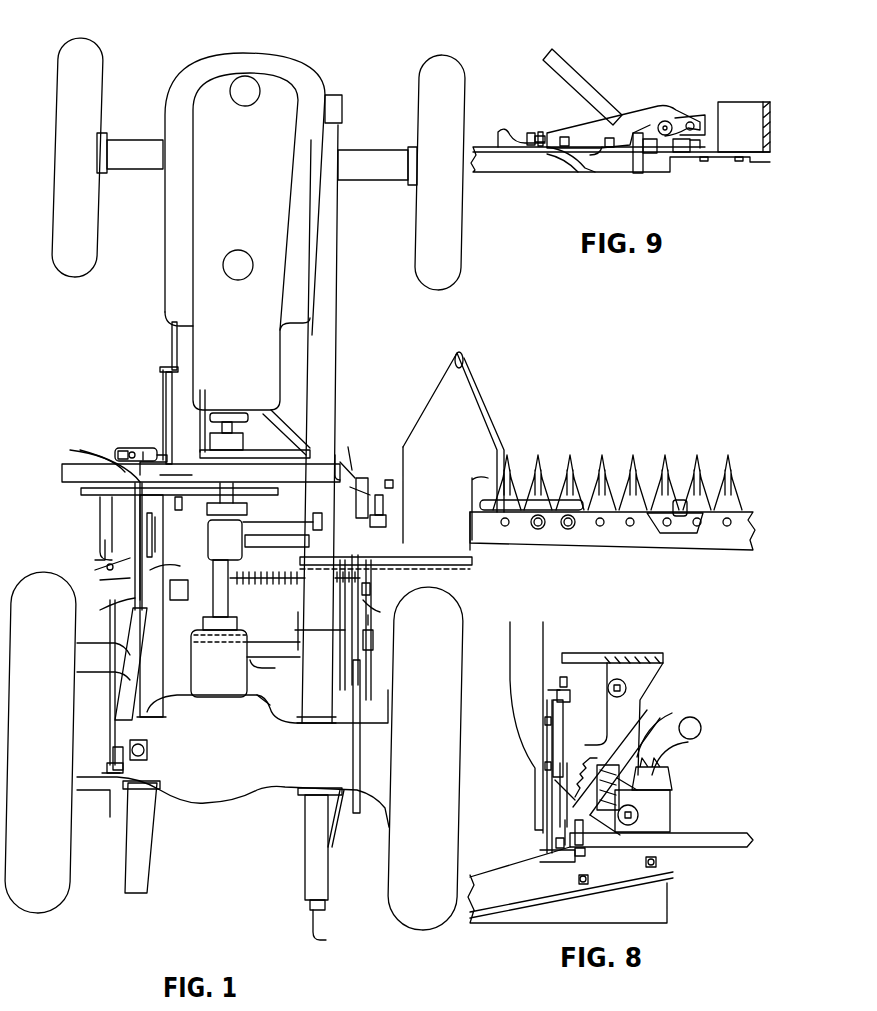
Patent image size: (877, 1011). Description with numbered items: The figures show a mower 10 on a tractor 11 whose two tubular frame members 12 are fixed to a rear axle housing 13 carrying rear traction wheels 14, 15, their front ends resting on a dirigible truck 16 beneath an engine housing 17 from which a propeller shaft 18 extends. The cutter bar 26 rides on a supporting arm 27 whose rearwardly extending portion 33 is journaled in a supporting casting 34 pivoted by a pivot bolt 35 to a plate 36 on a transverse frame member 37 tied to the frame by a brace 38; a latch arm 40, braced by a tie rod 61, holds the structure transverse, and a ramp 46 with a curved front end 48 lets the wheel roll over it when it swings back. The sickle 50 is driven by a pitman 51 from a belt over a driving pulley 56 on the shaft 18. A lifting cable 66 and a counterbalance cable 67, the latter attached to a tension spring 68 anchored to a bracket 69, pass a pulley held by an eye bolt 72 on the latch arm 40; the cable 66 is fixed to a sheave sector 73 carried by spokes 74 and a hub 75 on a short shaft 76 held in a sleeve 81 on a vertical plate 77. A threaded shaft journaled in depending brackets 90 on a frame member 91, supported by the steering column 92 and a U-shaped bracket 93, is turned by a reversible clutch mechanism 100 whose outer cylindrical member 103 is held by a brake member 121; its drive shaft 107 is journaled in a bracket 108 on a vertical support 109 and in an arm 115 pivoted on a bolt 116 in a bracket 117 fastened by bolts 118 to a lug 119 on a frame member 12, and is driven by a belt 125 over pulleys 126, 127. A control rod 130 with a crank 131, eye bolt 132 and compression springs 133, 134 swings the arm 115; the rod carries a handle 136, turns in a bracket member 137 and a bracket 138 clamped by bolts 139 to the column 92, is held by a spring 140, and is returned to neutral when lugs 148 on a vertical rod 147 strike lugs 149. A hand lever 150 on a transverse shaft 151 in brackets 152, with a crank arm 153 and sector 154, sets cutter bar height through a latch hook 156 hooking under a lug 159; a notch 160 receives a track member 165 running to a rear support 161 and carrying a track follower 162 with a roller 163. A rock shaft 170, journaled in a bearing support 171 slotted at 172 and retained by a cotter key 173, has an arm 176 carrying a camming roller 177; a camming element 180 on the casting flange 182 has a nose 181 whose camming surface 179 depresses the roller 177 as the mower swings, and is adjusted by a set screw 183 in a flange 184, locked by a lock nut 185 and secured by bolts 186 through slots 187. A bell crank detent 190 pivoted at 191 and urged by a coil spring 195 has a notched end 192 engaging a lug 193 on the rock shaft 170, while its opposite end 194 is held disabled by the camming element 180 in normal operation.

In FIG. 1, the mower 10 is at (507, 406).
In FIG. 1, the tractor 11 is at (352, 343).
In FIG. 1, the tubular frame members 12 is at (335, 395).
In FIG. 1, the rear axle housing 13 is at (245, 766).
In FIG. 1, the rear traction wheel 14 is at (425, 925).
In FIG. 1, the rear traction wheel 15 is at (40, 905).
In FIG. 1, the front dirigible truck 16 is at (467, 57).
In FIG. 1, the engine housing 17 is at (250, 194).
In FIG. 1, the propeller shaft 18 is at (240, 457).
In FIG. 1, the cutter bar 26 is at (606, 563).
In FIG. 1, the supporting arm 27 is at (270, 535).
In FIG. 1, the rearwardly extending portion 33 is at (188, 598).
In FIG. 8, the rearwardly extending portion 33 is at (690, 742).
In FIG. 1, the supporting casting 34 is at (190, 640).
In FIG. 8, the supporting casting 34 is at (672, 780).
In FIG. 8, the pivot bolt 35 is at (638, 818).
In FIG. 1, the plate 36 is at (182, 660).
In FIG. 9, the plate 36 is at (745, 160).
In FIG. 8, the plate 36 is at (670, 810).
In FIG. 1, the transverse frame member 37 is at (276, 695).
In FIG. 9, the transverse frame member 37 is at (740, 102).
In FIG. 8, the transverse frame member 37 is at (705, 870).
In FIG. 9, the brace 38 is at (565, 52).
In FIG. 8, the brace 38 is at (648, 713).
In FIG. 9, the latch arm 40 is at (490, 165).
In FIG. 8, the latch arm 40 is at (512, 668).
In FIG. 1, the ramp or shield 46 is at (452, 456).
In FIG. 1, the downwardly curved front end 48 is at (425, 425).
In FIG. 1, the reciprocating sickle 50 is at (618, 478).
In FIG. 1, the pitman 51 is at (365, 478).
In FIG. 1, the driving pulley 56 is at (247, 511).
In FIG. 1, the tie rod 61 is at (280, 416).
In FIG. 1, the lifting cable 66 is at (445, 557).
In FIG. 1, the counterbalance cable 67 is at (445, 570).
In FIG. 1, the tension spring 68 is at (290, 580).
In FIG. 1, the bracket 69 is at (158, 608).
In FIG. 1, the eye bolt 72 is at (138, 546).
In FIG. 1, the sheave sector 73 is at (83, 492).
In FIG. 1, the spokes 74 is at (100, 505).
In FIG. 1, the hub 75 is at (108, 530).
In FIG. 1, the short transversely disposed shaft 76 is at (100, 545).
In FIG. 1, the vertically extending plate 77 is at (157, 548).
In FIG. 1, the sleeve 81 is at (220, 560).
In FIG. 1, the depending brackets 90 is at (72, 450).
In FIG. 1, the frame member 91 is at (115, 590).
In FIG. 1, the steering wheel supporting column 92 is at (125, 768).
In FIG. 1, the U-shaped bracket 93 is at (152, 523).
In FIG. 1, the reversible clutch mechanism 100 is at (120, 441).
In FIG. 1, the outer cylindrical member 103 is at (63, 472).
In FIG. 1, the driving shaft 107 is at (166, 385).
In FIG. 1, the bracket 108 is at (162, 368).
In FIG. 1, the vertical support 109 is at (172, 340).
In FIG. 1, the arm 115 is at (338, 440).
In FIG. 1, the bolt 116 is at (350, 455).
In FIG. 1, the bracket 117 is at (360, 480).
In FIG. 1, the bolts 118 is at (355, 486).
In FIG. 1, the upwardly projecting lug 119 is at (309, 545).
In FIG. 1, the brake member 121 is at (225, 467).
In FIG. 1, the power transmitting belt 125 is at (205, 420).
In FIG. 1, the pulley 126 is at (240, 413).
In FIG. 1, the pulley 127 is at (163, 405).
In FIG. 1, the control rod 130 is at (110, 605).
In FIG. 1, the crank 131 is at (176, 468).
In FIG. 1, the eye bolt 132 is at (158, 454).
In FIG. 1, the compression spring 133 is at (143, 450).
In FIG. 1, the compression spring 134 is at (125, 450).
In FIG. 1, the handle portion 136 is at (100, 778).
In FIG. 1, the upwardly extending bracket member 137 is at (95, 452).
In FIG. 1, the bracket 138 is at (150, 790).
In FIG. 1, the clamping bolts 139 is at (148, 752).
In FIG. 1, the spring 140 is at (113, 752).
In FIG. 1, the vertically extending rod 147 is at (165, 568).
In FIG. 1, the ears or lugs 148 is at (182, 500).
In FIG. 1, the cooperative lug 149 is at (105, 562).
In FIG. 1, the manually controlled lever 150 is at (372, 668).
In FIG. 1, the transverse shaft 151 is at (345, 600).
In FIG. 1, the brackets 152 is at (298, 625).
In FIG. 1, the crank arm 153 is at (372, 590).
In FIG. 1, the sector 154 is at (373, 640).
In FIG. 1, the latch hook 156 is at (380, 610).
In FIG. 1, the projecting lug 159 is at (372, 622).
In FIG. 1, the notch 160 is at (393, 480).
In FIG. 1, the rear support 161 is at (325, 907).
In FIG. 1, the track follower 162 is at (386, 520).
In FIG. 1, the roller 163 is at (390, 492).
In FIG. 1, the track member 165 is at (335, 830).
In FIG. 1, the rock shaft 170 is at (286, 668).
In FIG. 8, the rock shaft 170 is at (735, 850).
In FIG. 9, the bearing support 171 is at (695, 150).
In FIG. 8, the bearing support 171 is at (575, 845).
In FIG. 8, the slot 172 is at (580, 860).
In FIG. 8, the cotter key 173 is at (585, 852).
In FIG. 9, the arm 176 is at (680, 152).
In FIG. 8, the arm 176 is at (556, 845).
In FIG. 9, the camming roller 177 is at (683, 118).
In FIG. 8, the camming roller 177 is at (565, 835).
In FIG. 9, the camming surface 179 is at (690, 122).
In FIG. 9, the camming element 180 is at (637, 100).
In FIG. 8, the camming element 180 is at (545, 780).
In FIG. 9, the rearwardly projecting nose 181 is at (668, 120).
In FIG. 8, the rearwardly projecting nose 181 is at (545, 858).
In FIG. 8, the flange portion 182 is at (565, 730).
In FIG. 9, the set screw 183 is at (530, 132).
In FIG. 8, the set screw 183 is at (575, 670).
In FIG. 8, the flange 184 is at (570, 697).
In FIG. 9, the lock nut 185 is at (543, 132).
In FIG. 8, the lock nut 185 is at (550, 690).
In FIG. 9, the bolts 186 is at (612, 141).
In FIG. 8, the bolts 186 is at (545, 719).
In FIG. 9, the slots 187 is at (598, 152).
In FIG. 9, the detent member 190 is at (650, 152).
In FIG. 8, the detent member 190 is at (637, 792).
In FIG. 8, the pivot 191 is at (620, 790).
In FIG. 8, the notched end 192 is at (605, 840).
In FIG. 8, the downwardly extending lug 193 is at (560, 812).
In FIG. 9, the opposite end 194 is at (637, 155).
In FIG. 8, the opposite end 194 is at (562, 800).
In FIG. 8, the coil spring 195 is at (575, 795).